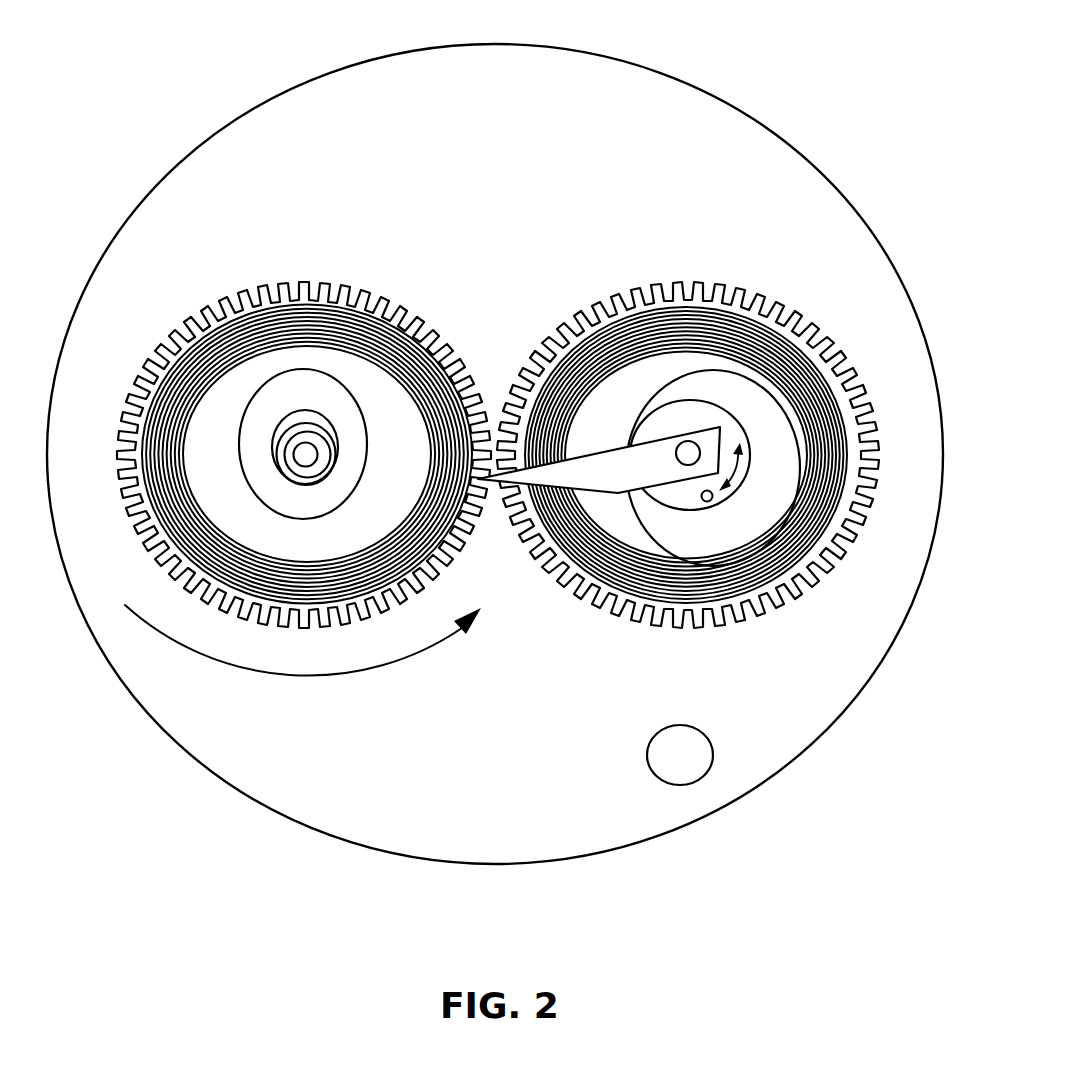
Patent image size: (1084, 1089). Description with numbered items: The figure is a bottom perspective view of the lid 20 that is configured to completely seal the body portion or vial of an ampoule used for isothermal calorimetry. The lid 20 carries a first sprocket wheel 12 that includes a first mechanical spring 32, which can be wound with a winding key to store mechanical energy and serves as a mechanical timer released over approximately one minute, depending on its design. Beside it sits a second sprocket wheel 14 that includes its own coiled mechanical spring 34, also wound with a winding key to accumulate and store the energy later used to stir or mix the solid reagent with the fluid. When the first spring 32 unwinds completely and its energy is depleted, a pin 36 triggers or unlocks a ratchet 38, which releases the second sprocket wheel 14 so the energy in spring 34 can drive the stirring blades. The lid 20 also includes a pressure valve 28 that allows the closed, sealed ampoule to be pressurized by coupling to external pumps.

The lid 20 is at (630, 97).
The second sprocket wheel 14 is at (288, 285).
The mechanical spring 34 is at (220, 332).
The first sprocket wheel 12 is at (736, 290).
The first mechanical spring 32 is at (778, 342).
The pin 36 is at (710, 500).
The ratchet 38 is at (602, 478).
The pressure valve 28 is at (695, 765).